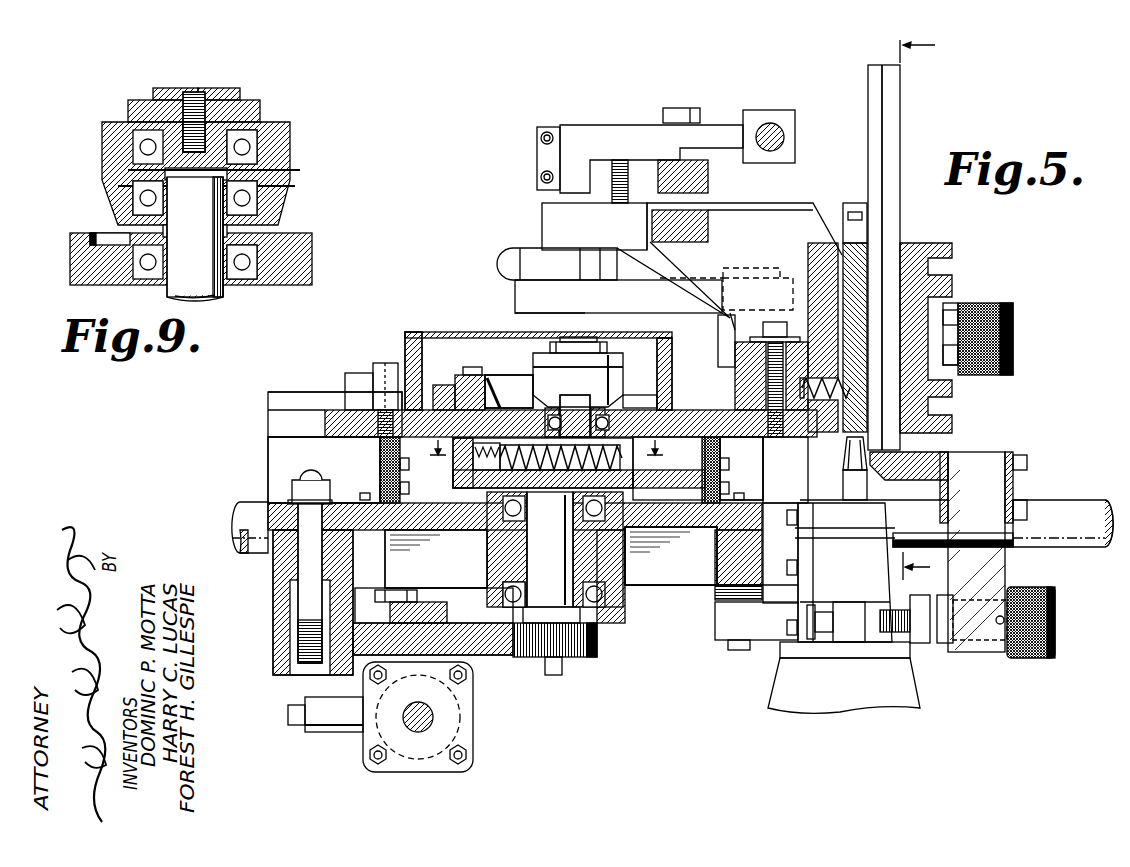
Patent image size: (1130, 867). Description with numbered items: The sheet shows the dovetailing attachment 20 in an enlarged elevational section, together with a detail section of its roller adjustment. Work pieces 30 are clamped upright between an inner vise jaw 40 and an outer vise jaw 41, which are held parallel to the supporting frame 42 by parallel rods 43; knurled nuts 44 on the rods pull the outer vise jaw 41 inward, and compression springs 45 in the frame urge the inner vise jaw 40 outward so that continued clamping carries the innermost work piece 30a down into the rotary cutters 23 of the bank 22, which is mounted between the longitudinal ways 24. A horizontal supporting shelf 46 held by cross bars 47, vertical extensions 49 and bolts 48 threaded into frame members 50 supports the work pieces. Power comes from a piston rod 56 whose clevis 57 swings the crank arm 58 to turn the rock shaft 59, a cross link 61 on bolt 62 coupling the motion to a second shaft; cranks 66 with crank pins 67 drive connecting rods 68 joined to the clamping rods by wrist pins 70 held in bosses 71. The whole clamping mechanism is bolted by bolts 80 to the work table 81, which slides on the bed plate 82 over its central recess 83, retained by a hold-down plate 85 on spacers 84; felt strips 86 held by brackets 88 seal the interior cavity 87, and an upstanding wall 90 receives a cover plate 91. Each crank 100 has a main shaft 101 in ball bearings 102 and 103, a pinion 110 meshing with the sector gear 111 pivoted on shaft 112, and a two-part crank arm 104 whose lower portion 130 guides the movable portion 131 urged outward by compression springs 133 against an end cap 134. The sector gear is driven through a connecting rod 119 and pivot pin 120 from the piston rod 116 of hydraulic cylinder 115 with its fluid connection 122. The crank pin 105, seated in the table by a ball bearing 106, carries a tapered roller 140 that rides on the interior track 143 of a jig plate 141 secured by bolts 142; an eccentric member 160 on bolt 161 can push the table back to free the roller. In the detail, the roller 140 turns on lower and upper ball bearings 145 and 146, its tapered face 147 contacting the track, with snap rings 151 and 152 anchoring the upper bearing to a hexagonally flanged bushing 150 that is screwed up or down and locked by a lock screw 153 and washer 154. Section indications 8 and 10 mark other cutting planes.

In FIG. 9, the lock screw 153 is at (195, 88).
In FIG. 9, the washer 154 is at (225, 88).
In FIG. 5, the washer 154 is at (580, 342).
In FIG. 9, the hexagonally flanged bushing 150 is at (255, 105).
In FIG. 5, the hexagonally flanged bushing 150 is at (565, 337).
In FIG. 9, the upper radial ball bearing 146 is at (250, 140).
In FIG. 9, the tapered roller 140 is at (300, 158).
In FIG. 5, the tapered roller 140 is at (597, 365).
In FIG. 9, the snap ring 151 is at (150, 170).
In FIG. 9, the snap ring 152 is at (155, 184).
In FIG. 9, the cam-track-contacting face 147 is at (290, 197).
In FIG. 5, the cam-track-contacting face 147 is at (577, 409).
In FIG. 9, the lower radial ball bearing 145 is at (276, 212).
In FIG. 9, the work table 81 is at (300, 262).
In FIG. 5, the work table 81 is at (320, 440).
In FIG. 9, the crank pin 105 is at (180, 275).
In FIG. 5, the crank pin 105 is at (610, 405).
In FIG. 9, the radial ball bearing 106 is at (245, 282).
In FIG. 5, the radial ball bearing 106 is at (553, 405).
In FIG. 5, the crank arm 58 is at (635, 125).
In FIG. 5, the rock shaft 59 is at (580, 127).
In FIG. 5, the bolt 62 is at (680, 108).
In FIG. 5, the clevis 57 is at (755, 112).
In FIG. 5, the piston rod 56 is at (777, 125).
In FIG. 5, the cross link 61 is at (708, 180).
In FIG. 5, the supporting frame 42 is at (772, 212).
In FIG. 5, the connecting rod 68 is at (625, 266).
In FIG. 5, the crank 66 is at (510, 255).
In FIG. 5, the crank pin 67 is at (530, 314).
In FIG. 5, the wrist pin 70 is at (742, 270).
In FIG. 5, the boss 71 is at (718, 340).
In FIG. 5, the bolts 80 is at (770, 322).
In FIG. 5, the inner vise jaw 40 is at (835, 255).
In FIG. 5, the compression springs 45 is at (835, 432).
In FIG. 5, the work pieces 30 is at (865, 92).
In FIG. 5, the innermost work piece 30a is at (868, 120).
In FIG. 5, the section line 8 is at (925, 312).
In FIG. 5, the outer vise jaw 41 is at (925, 243).
In FIG. 5, the knurled nuts 44 is at (980, 303).
In FIG. 5, the parallel rods 43 is at (1013, 325).
In FIG. 5, the horizontal supporting shelf 46 is at (930, 452).
In FIG. 5, the cross bars 47 is at (1005, 466).
In FIG. 5, the longitudinal ways 24 is at (1068, 500).
In FIG. 5, the vertical extensions 49 is at (1005, 567).
In FIG. 5, the bolts 48 is at (1055, 646).
In FIG. 5, the rotary cutters 23 is at (843, 482).
In FIG. 5, the frame members 50 is at (862, 600).
In FIG. 5, the bank of rotary cutters 22 is at (920, 688).
In FIG. 5, the dovetailing attachment 20 is at (678, 590).
In FIG. 5, the cover plate 91 is at (440, 332).
In FIG. 5, the upstanding wall 90 is at (422, 350).
In FIG. 5, the hold-down plate 85 is at (320, 392).
In FIG. 5, the spacers 84 is at (275, 408).
In FIG. 5, the eccentric member 160 is at (355, 375).
In FIG. 5, the bolt 161 is at (385, 363).
In FIG. 5, the bolts 142 is at (472, 367).
In FIG. 5, the jig plate 141 is at (505, 375).
In FIG. 5, the interior track 143 is at (505, 395).
In FIG. 5, the movable crank arm portion 131 is at (657, 400).
In FIG. 5, the section line 10 is at (548, 450).
In FIG. 5, the compression springs 133 is at (480, 458).
In FIG. 5, the end cap 134 is at (465, 478).
In FIG. 5, the crank arm 104 is at (640, 475).
In FIG. 5, the lower crank arm portion 130 is at (640, 482).
In FIG. 5, the transverse strips 86 is at (380, 450).
In FIG. 5, the brackets 88 is at (400, 470).
In FIG. 5, the bed plate 82 is at (262, 515).
In FIG. 5, the shaft 112 is at (300, 578).
In FIG. 5, the radial ball bearing 102 is at (505, 512).
In FIG. 5, the main shaft 101 is at (540, 520).
In FIG. 5, the radial ball bearing 103 is at (500, 585).
In FIG. 5, the pivot pin 120 is at (395, 620).
In FIG. 5, the connecting rod 119 is at (440, 612).
In FIG. 5, the pinion 110 is at (597, 655).
In FIG. 5, the crank 100 is at (565, 675).
In FIG. 5, the sector gear 111 is at (488, 655).
In FIG. 5, the interior cavity 87 is at (672, 522).
In FIG. 5, the central recess 83 is at (671, 556).
In FIG. 5, the hydraulic cylinder 115 is at (465, 728).
In FIG. 5, the piston rod 116 is at (418, 735).
In FIG. 5, the fluid connection 122 is at (330, 735).